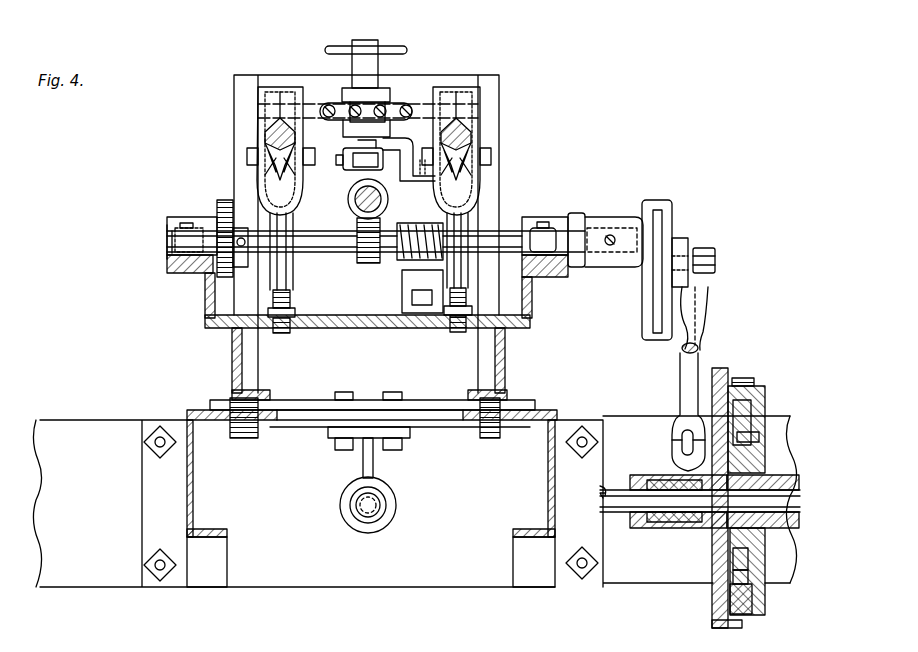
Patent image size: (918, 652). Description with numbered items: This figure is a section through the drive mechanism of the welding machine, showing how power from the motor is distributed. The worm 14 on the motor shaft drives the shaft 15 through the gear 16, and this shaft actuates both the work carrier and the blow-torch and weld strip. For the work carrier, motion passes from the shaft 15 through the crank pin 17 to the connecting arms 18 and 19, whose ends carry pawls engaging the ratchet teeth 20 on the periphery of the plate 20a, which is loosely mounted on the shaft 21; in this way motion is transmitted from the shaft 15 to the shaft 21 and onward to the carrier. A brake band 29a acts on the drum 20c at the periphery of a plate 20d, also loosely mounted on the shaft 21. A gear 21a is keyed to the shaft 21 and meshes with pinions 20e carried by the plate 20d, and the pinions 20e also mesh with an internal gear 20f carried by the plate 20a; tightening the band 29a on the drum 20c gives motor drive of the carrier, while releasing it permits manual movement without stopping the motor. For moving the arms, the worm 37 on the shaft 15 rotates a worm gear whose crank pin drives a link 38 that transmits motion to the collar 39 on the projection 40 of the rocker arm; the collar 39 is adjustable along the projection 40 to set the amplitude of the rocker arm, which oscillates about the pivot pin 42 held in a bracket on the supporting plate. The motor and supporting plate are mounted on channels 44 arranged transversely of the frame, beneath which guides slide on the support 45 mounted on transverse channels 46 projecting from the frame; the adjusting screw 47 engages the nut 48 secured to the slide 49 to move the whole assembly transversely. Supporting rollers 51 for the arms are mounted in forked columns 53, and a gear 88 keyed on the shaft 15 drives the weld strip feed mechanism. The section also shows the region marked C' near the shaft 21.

The worm 14 is at (350, 200).
The shaft 15 is at (331, 250).
The gear 16 is at (368, 265).
The crank pin 17 is at (716, 256).
The connecting arm 18 is at (700, 318).
The connecting arm 19 is at (680, 389).
The ratchet teeth 20 is at (720, 368).
The plate 20a is at (742, 455).
The drum 20c is at (750, 392).
The plate 20d is at (764, 410).
The pinions 20e is at (738, 574).
The internal gear 20f is at (728, 592).
The shaft 21 is at (620, 502).
The gear 21a is at (722, 522).
The brake band 29a is at (744, 378).
The worm 37 is at (428, 240).
The link 38 is at (402, 150).
The collar 39 is at (348, 174).
The projection 40 is at (360, 125).
The pivot pin 42 is at (378, 42).
The channels 44 is at (232, 362).
The support 45 is at (195, 413).
The transverse channels 46 is at (193, 507).
The adjusting screw 47 is at (372, 506).
The nut 48 is at (398, 498).
The slide 49 is at (433, 400).
The rollers 51 is at (265, 160).
The forked columns 53 is at (293, 290).
The gear 88 is at (217, 205).
The carriage C' is at (632, 439).